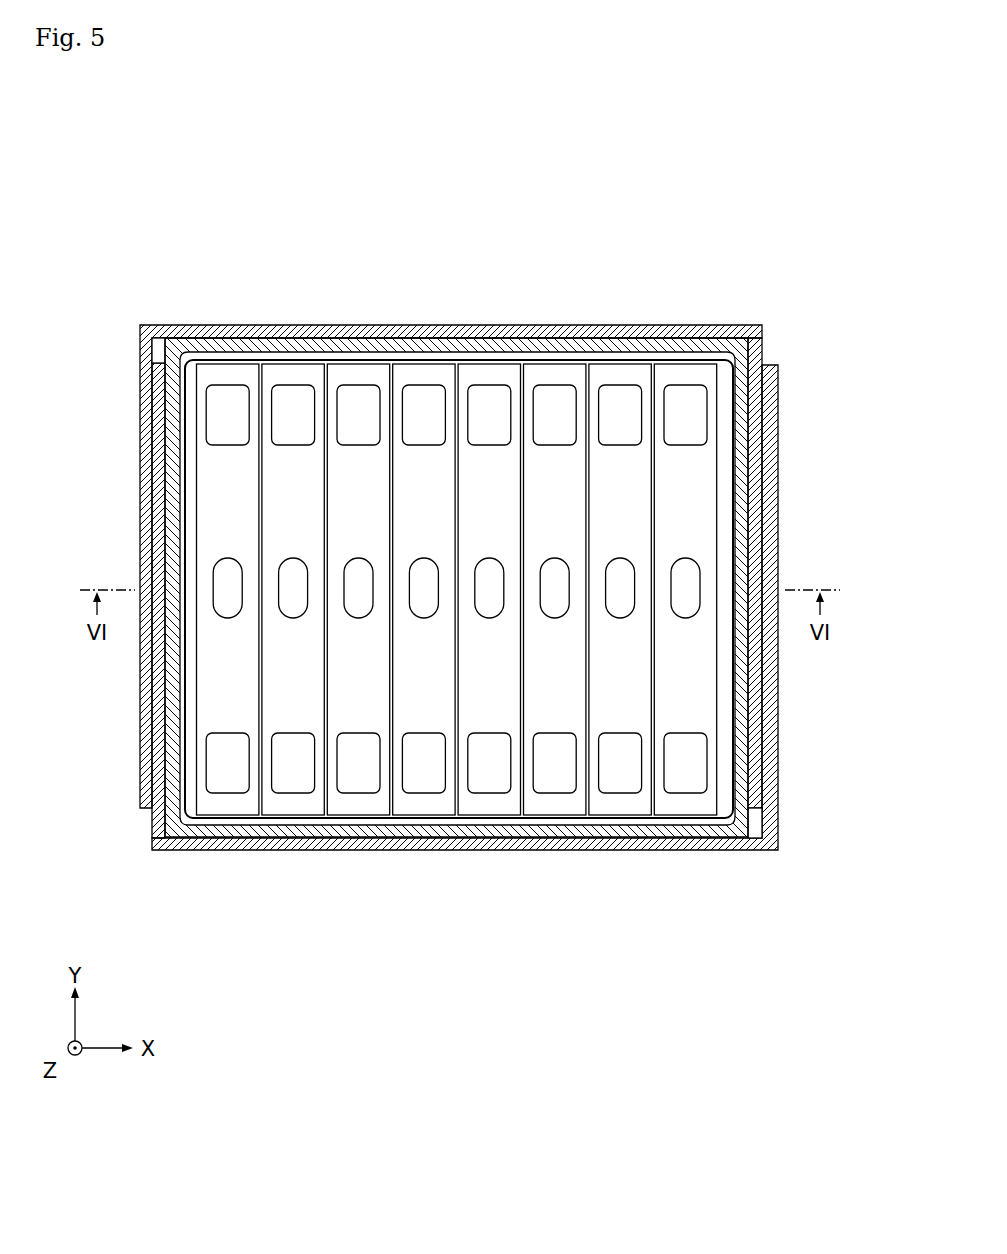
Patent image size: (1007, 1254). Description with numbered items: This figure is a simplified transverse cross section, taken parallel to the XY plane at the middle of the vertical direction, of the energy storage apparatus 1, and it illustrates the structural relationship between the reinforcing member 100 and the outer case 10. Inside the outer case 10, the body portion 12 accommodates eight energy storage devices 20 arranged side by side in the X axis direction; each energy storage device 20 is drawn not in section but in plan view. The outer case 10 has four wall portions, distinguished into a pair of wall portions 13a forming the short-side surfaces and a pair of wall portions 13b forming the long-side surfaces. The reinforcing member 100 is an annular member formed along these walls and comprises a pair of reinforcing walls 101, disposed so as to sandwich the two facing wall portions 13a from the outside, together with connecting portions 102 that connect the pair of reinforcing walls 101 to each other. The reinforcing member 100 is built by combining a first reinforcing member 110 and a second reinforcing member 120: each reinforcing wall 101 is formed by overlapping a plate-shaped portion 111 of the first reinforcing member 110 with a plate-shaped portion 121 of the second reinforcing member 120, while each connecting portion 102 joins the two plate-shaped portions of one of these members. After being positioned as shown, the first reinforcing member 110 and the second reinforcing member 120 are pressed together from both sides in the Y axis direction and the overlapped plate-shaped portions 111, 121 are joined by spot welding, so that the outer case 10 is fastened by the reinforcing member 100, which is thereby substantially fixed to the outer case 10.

The energy storage apparatus 1 is at (780, 171).
The outer case 10 is at (195, 920).
The body portion 12 is at (459, 589).
The wall portions 13a is at (752, 541).
The wall portions 13b is at (440, 342).
The energy storage device 20 is at (240, 376).
The reinforcing member 100 is at (687, 245).
The reinforcing wall 101 is at (98, 250).
The connecting portion 102 is at (485, 330).
The first reinforcing member 110 is at (779, 402).
The plate-shaped portion 111 is at (158, 355).
The second reinforcing member 120 is at (692, 324).
The plate-shaped portion 121 is at (140, 412).